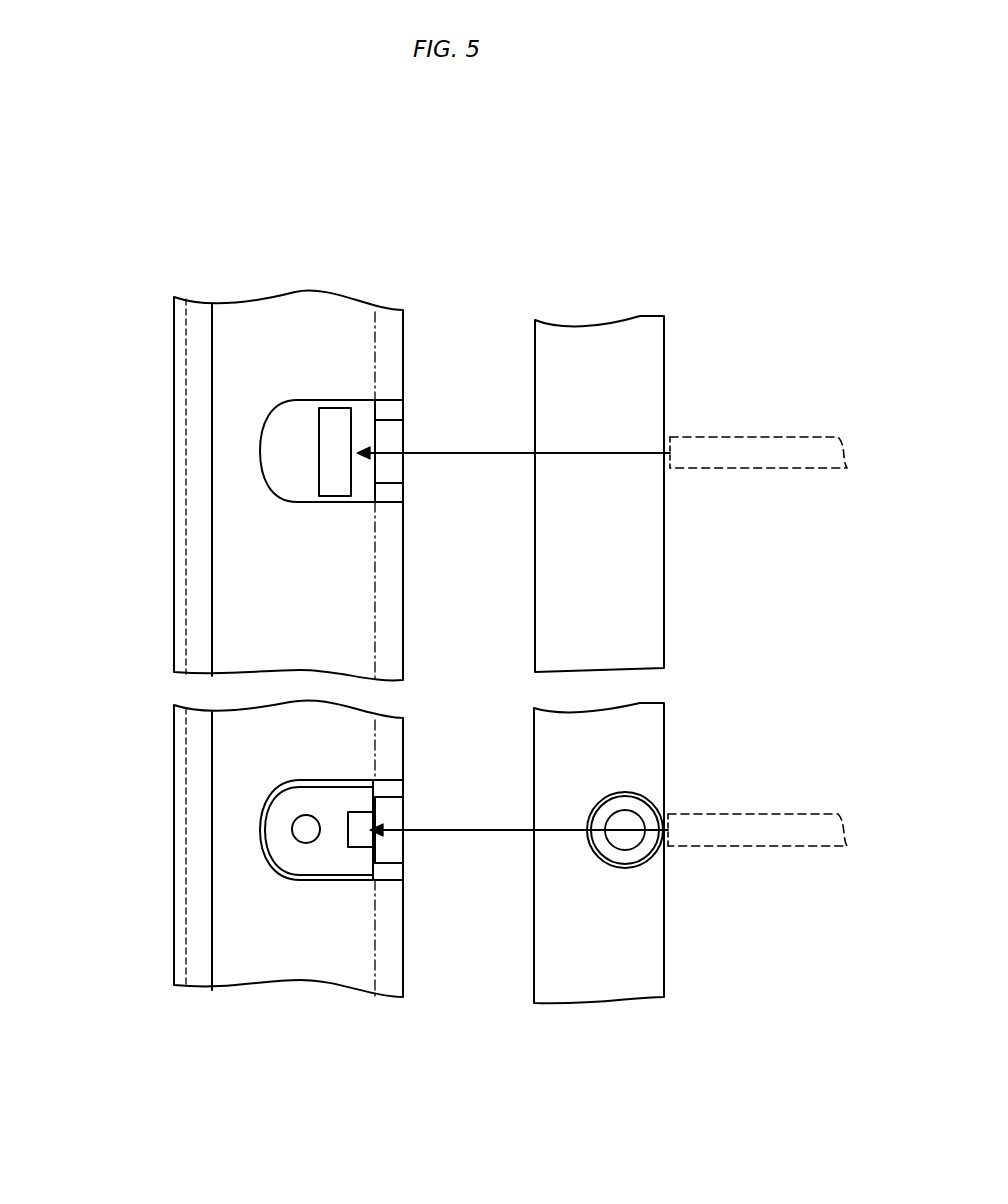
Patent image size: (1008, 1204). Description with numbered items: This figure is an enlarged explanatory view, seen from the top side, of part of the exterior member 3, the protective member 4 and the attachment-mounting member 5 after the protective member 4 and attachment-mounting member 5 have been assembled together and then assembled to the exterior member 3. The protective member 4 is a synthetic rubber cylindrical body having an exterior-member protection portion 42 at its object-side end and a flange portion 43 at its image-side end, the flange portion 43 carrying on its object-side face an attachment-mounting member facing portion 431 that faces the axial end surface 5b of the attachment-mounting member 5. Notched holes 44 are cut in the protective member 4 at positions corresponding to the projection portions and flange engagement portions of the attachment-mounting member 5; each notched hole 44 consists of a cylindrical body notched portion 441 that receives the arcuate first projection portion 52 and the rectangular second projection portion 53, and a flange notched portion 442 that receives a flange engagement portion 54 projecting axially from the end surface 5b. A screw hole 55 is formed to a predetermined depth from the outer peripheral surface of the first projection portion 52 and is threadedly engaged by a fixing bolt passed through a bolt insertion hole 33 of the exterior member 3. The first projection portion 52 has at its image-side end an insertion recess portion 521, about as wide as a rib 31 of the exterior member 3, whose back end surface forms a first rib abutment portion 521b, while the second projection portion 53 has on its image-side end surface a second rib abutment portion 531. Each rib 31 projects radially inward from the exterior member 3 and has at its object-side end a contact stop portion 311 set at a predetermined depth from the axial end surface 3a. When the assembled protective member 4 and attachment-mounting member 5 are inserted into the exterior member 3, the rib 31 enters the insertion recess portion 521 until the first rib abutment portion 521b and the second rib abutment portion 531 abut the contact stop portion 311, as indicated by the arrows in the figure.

The exterior member 3 is at (598, 320).
The axial end surface 3a is at (534, 363).
The rib 31 is at (768, 437).
The contact stop portion 311 is at (670, 452).
The bolt insertion hole 33 is at (640, 815).
The protective member 4 is at (270, 294).
The exterior-member protection portion 42 is at (180, 457).
The flange portion 43 is at (403, 562).
The attachment-mounting member facing portion 431 is at (375, 635).
The notched hole 44 is at (345, 321).
The cylindrical body notched portion 441 is at (298, 435).
The flange notched portion 442 is at (360, 437).
The attachment-mounting member 5 is at (235, 577).
The axial end surface 5b is at (178, 340).
The first projection portion 52 is at (305, 860).
The insertion recess portion 521 is at (390, 852).
The first rib abutment portion 521b is at (360, 830).
The second projection portion 53 is at (338, 483).
The second rib abutment portion 531 is at (352, 463).
The flange engagement portion 54 is at (387, 435).
The screw hole 55 is at (297, 853).